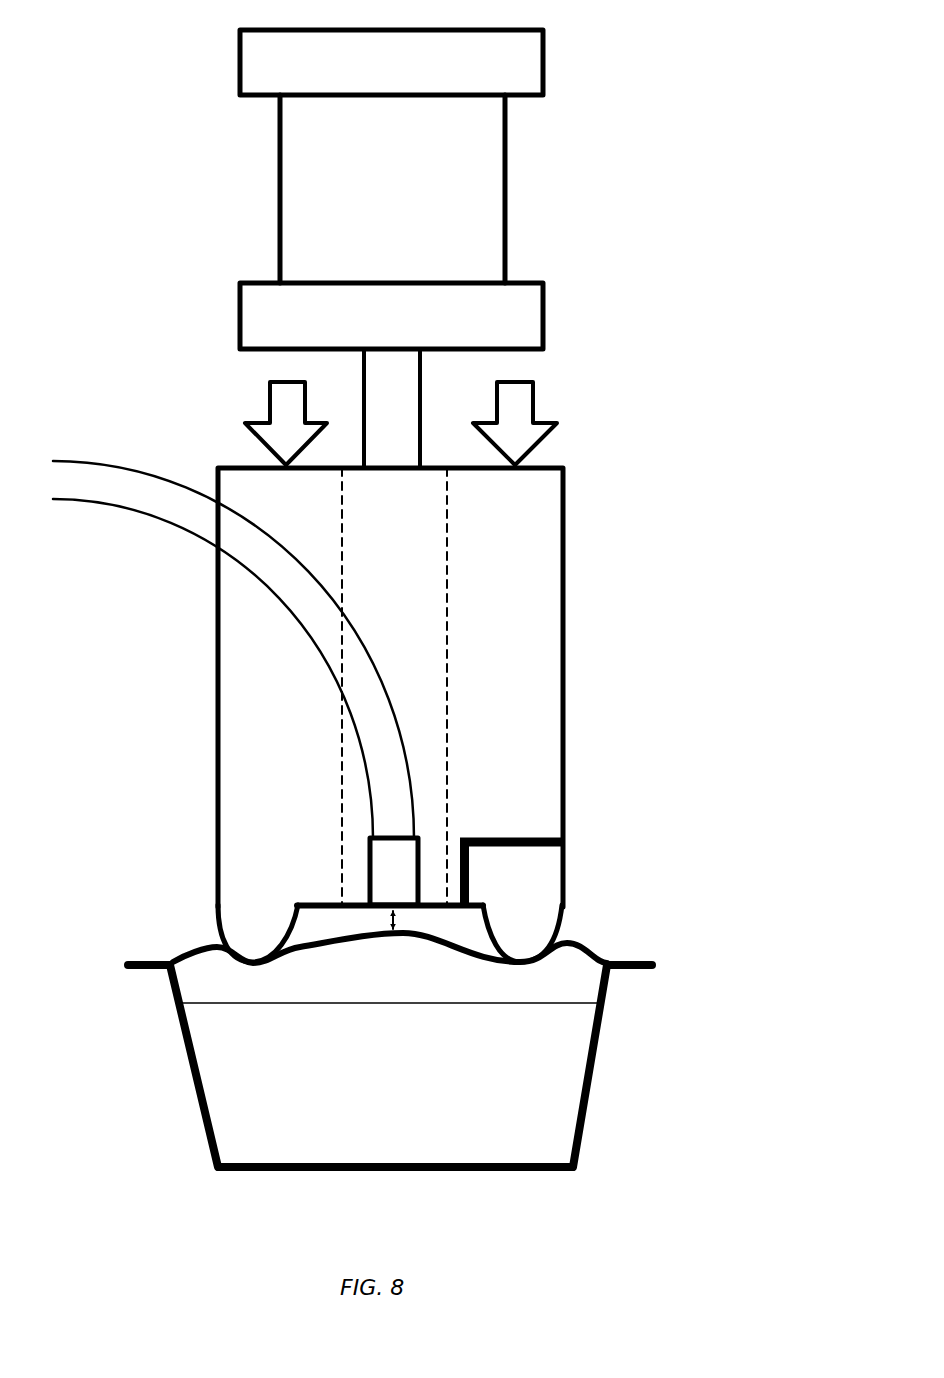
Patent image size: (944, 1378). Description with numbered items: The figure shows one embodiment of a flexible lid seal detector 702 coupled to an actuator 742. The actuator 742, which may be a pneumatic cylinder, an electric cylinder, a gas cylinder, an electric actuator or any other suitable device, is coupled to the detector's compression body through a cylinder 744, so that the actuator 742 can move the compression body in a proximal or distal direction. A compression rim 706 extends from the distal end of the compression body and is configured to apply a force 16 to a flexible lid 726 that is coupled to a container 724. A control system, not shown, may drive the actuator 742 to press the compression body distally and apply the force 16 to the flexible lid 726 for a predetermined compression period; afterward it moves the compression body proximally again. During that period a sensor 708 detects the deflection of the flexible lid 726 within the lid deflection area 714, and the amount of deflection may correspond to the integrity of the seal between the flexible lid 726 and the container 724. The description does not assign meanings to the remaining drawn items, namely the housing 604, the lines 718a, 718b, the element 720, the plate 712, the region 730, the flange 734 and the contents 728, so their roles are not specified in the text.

The actuator 742 is at (280, 170).
The cylinder 744 is at (364, 395).
The force 16 is at (270, 415).
The flexible lid seal detector 702 is at (582, 410).
The housing body 604 is at (565, 573).
The fluid line 718b is at (162, 478).
The fluid line 718a is at (129, 509).
The sensor 708 is at (375, 836).
The seal retainer 720 is at (525, 830).
The pressure plate 712 is at (332, 902).
The lid deflection area 714 is at (330, 930).
The compression rim 706 is at (542, 913).
The flexible lid 726 is at (582, 927).
The headspace 730 is at (205, 975).
The container flange 734 is at (658, 958).
The container 724 is at (600, 1043).
The liquid contents 728 is at (245, 1078).